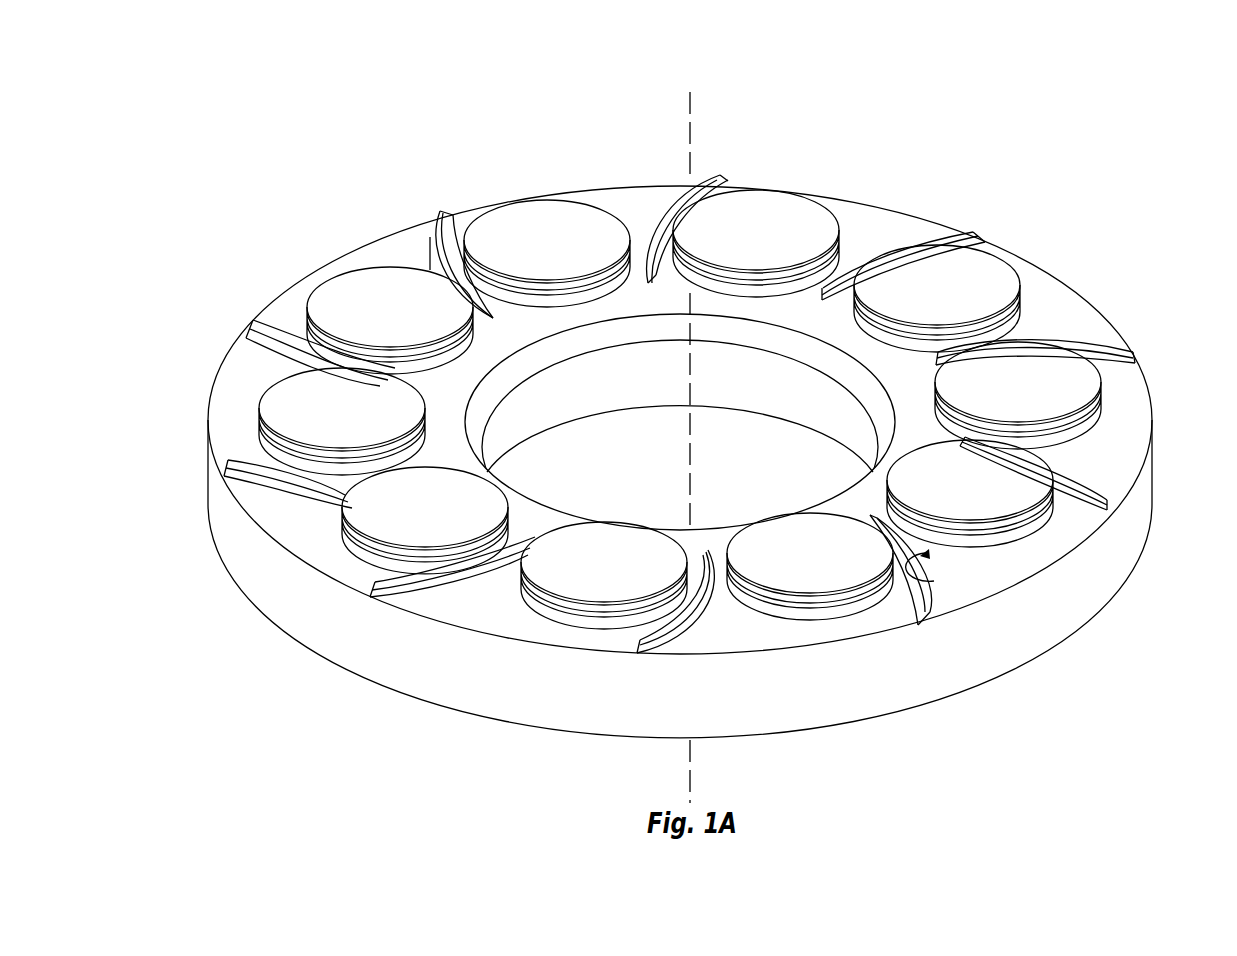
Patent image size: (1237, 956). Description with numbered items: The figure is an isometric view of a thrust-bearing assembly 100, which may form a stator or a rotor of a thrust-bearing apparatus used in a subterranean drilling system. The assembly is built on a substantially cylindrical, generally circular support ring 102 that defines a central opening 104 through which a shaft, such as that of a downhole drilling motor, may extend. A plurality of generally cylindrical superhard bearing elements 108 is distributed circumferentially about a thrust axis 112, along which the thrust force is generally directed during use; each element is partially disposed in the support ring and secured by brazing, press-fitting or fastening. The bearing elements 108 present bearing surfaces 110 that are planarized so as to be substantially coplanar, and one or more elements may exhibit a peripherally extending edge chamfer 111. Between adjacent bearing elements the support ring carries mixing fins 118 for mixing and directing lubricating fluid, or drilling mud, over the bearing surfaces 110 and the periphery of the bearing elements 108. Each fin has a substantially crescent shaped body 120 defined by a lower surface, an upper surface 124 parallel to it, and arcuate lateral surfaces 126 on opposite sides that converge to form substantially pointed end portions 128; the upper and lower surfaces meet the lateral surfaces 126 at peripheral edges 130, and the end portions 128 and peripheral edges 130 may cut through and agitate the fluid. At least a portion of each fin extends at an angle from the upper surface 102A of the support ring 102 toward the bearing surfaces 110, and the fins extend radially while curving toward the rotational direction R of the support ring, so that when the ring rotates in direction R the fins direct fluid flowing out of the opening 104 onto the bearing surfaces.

The thrust-bearing assembly 100 is at (345, 122).
The support ring 102 is at (1135, 514).
The upper surface of the support ring 102A is at (1137, 407).
The opening 104 is at (666, 486).
The superhard bearing elements 108 is at (531, 196).
The bearing surfaces 110 is at (582, 233).
The peripherally extending edge chamfer 111 is at (1013, 297).
The thrust axis 112 is at (695, 434).
The mixing fins 118 is at (420, 238).
The crescent shaped body 120 is at (440, 212).
The upper surface 124 is at (445, 233).
The lateral surfaces 126 is at (453, 250).
The end portions 128 is at (438, 215).
The peripheral edges 130 is at (447, 268).
The rotational direction R is at (929, 565).